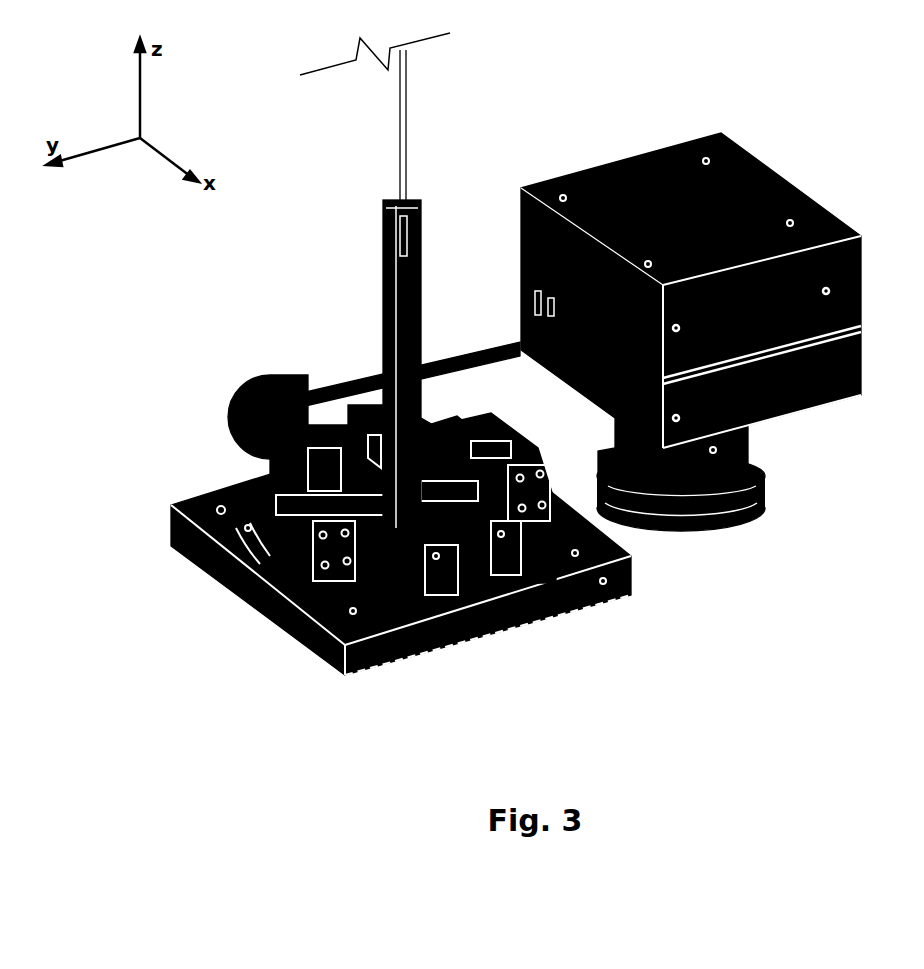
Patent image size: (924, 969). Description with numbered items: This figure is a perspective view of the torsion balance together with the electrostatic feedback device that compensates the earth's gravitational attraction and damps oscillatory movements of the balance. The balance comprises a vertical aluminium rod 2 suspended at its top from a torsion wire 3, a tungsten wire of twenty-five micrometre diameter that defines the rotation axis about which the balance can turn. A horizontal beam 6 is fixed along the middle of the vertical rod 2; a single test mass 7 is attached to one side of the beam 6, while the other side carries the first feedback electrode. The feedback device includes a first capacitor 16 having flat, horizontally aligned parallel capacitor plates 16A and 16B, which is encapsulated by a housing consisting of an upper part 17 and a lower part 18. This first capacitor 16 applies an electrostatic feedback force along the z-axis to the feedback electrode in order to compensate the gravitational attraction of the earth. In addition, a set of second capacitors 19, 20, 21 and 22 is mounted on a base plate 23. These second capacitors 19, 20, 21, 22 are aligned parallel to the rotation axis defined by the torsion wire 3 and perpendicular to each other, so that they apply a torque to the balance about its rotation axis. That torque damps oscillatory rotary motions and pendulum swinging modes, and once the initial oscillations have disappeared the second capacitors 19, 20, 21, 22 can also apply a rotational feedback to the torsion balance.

The vertical rod 2 is at (402, 278).
The torsion wire 3 is at (392, 120).
The horizontal beam 6 is at (485, 340).
The test mass 7 is at (222, 388).
The first capacitor 16 is at (679, 367).
The capacitor plate 16A is at (547, 302).
The capacitor plate 16B is at (570, 290).
The upper part 17 is at (808, 283).
The lower part 18 is at (787, 373).
The second capacitor 19 is at (222, 583).
The second capacitor 20 is at (458, 543).
The second capacitor 21 is at (500, 427).
The second capacitor 22 is at (318, 423).
The base plate 23 is at (298, 637).